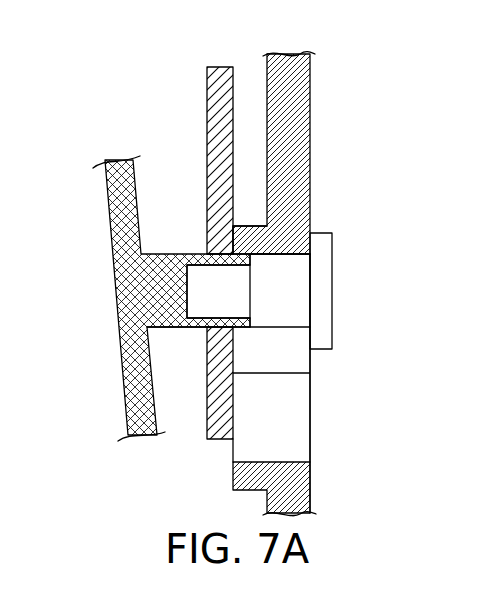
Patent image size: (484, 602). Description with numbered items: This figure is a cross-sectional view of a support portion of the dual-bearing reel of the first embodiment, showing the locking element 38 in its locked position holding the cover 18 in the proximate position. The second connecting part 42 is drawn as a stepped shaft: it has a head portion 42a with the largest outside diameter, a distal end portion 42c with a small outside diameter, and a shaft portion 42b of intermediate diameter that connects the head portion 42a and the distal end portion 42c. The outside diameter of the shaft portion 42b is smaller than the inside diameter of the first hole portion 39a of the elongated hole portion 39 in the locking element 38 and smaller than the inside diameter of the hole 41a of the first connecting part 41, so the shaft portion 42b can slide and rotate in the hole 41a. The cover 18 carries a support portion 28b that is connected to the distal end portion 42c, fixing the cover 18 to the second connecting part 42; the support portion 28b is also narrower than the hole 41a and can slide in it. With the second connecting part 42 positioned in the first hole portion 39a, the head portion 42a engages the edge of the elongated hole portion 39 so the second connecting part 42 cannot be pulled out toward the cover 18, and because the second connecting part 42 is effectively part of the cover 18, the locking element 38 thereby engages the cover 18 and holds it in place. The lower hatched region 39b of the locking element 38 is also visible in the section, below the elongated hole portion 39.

The cover 18 is at (105, 277).
The support portion 28b is at (177, 327).
The locking element 38 is at (311, 90).
The elongated hole portion 39 is at (250, 223).
The first hole portion 39a is at (280, 267).
The lower protrusion 39b is at (280, 461).
The first connecting part 41 is at (207, 100).
The hole 41a is at (218, 266).
The second connecting part 42 is at (341, 288).
The head portion 42a is at (322, 320).
The shaft portion 42b is at (283, 308).
The distal end portion 42c is at (215, 296).